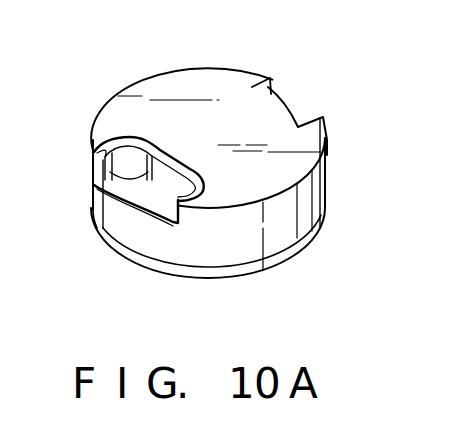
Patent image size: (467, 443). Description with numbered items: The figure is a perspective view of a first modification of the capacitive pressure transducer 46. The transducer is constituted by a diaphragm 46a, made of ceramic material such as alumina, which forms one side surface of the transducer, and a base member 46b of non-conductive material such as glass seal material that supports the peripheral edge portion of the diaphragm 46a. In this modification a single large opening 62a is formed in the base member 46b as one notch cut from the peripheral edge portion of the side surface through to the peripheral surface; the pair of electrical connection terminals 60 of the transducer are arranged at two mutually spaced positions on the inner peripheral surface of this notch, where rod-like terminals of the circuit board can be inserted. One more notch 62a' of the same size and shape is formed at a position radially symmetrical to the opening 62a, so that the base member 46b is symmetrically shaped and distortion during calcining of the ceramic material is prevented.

The capacitive pressure transducer 46 is at (332, 184).
The diaphragm 46a is at (130, 257).
The base member 46b is at (122, 110).
The electrical connection terminals 60 is at (103, 188).
The opening 62a is at (164, 97).
The notch 62a' is at (320, 97).